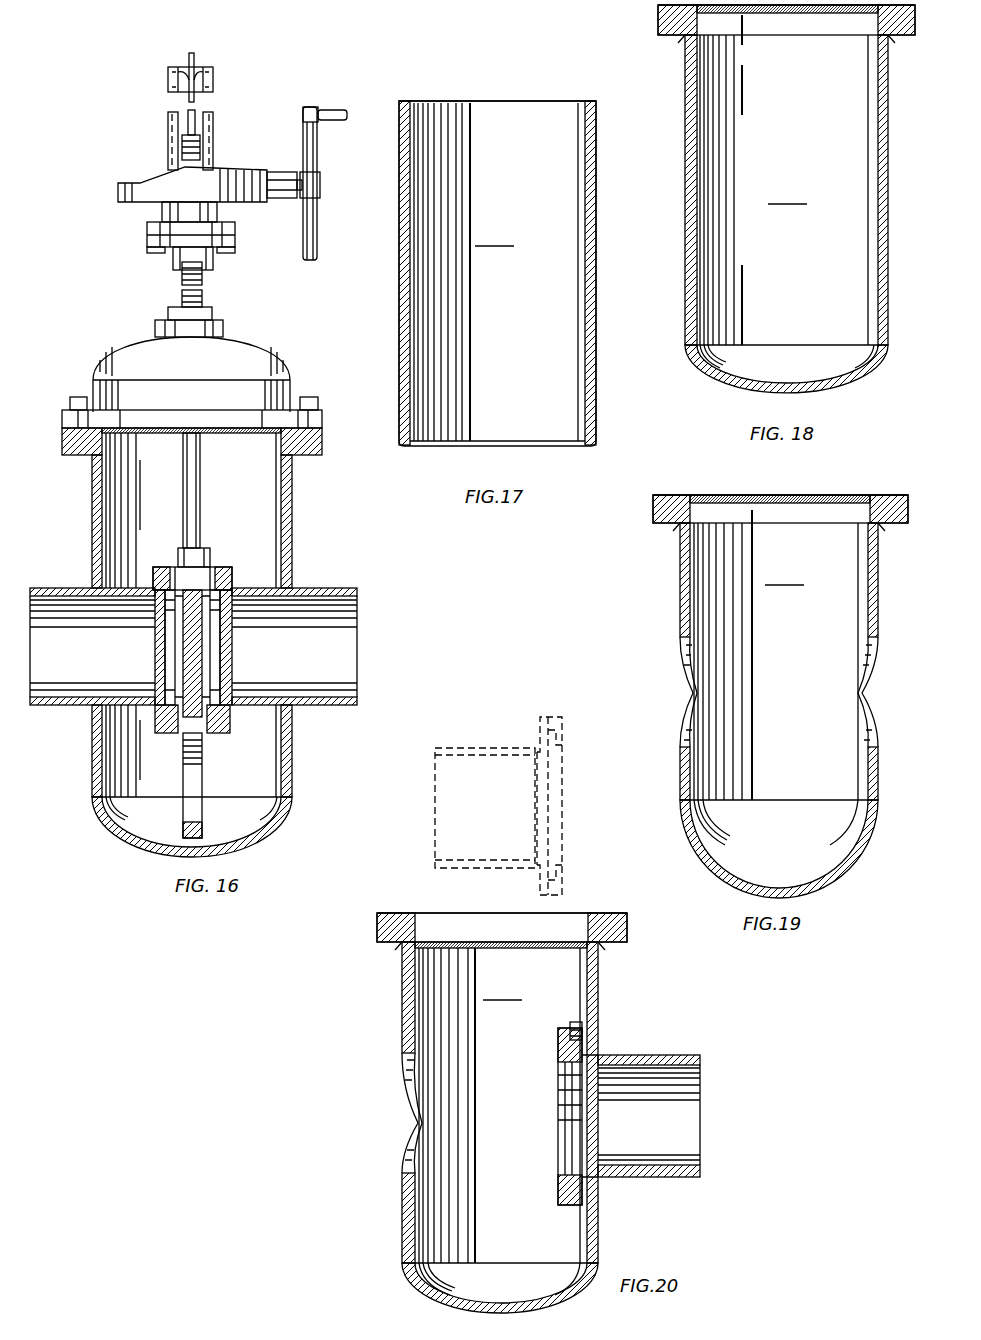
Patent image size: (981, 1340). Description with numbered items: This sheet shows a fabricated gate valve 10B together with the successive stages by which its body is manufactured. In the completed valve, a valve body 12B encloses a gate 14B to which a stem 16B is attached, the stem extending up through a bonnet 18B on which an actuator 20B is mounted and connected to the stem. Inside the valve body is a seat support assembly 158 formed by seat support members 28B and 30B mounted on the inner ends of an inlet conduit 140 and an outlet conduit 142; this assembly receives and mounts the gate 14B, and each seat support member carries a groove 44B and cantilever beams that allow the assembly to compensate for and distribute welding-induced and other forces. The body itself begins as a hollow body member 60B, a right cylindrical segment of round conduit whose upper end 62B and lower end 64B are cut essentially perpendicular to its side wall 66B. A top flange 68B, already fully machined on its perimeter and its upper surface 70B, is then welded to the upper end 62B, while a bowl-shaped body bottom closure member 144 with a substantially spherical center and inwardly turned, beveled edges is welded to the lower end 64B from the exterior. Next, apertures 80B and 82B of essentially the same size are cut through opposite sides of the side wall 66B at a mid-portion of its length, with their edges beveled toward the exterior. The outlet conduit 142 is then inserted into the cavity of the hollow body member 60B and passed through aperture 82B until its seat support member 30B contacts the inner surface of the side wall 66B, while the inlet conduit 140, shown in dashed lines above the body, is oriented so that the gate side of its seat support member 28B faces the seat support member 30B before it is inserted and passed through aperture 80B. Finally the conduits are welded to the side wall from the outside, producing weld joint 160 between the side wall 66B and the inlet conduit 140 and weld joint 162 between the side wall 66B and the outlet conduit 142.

In FIG. 16, the gate valve 10B is at (113, 128).
In FIG. 16, the actuator 20B is at (205, 175).
In FIG. 16, the bonnet 18B is at (262, 417).
In FIG. 16, the valve body 12B is at (66, 520).
In FIG. 16, the stem 16B is at (192, 485).
In FIG. 16, the top flange 68B is at (310, 447).
In FIG. 18, the top flange 68B is at (670, 38).
In FIG. 19, the top flange 68B is at (655, 505).
In FIG. 20, the top flange 68B is at (378, 928).
In FIG. 16, the seat support assembly 158 is at (216, 536).
In FIG. 16, the side wall 66B is at (290, 520).
In FIG. 17, the side wall 66B is at (588, 210).
In FIG. 18, the side wall 66B is at (885, 132).
In FIG. 19, the side wall 66B is at (878, 620).
In FIG. 20, the side wall 66B is at (600, 965).
In FIG. 16, the seat support member 28B is at (155, 578).
In FIG. 20, the seat support member 28B is at (562, 882).
In FIG. 16, the seat support member 30B is at (226, 575).
In FIG. 20, the seat support member 30B is at (590, 1034).
In FIG. 16, the inlet conduit 140 is at (85, 612).
In FIG. 20, the inlet conduit 140 is at (535, 750).
In FIG. 16, the outlet conduit 142 is at (333, 625).
In FIG. 20, the outlet conduit 142 is at (695, 1112).
In FIG. 16, the groove 44B is at (160, 658).
In FIG. 20, the groove 44B is at (575, 1140).
In FIG. 16, the weld joint 160 is at (92, 710).
In FIG. 16, the weld joint 162 is at (292, 710).
In FIG. 16, the gate 14B is at (192, 765).
In FIG. 16, the lower end 64B is at (265, 797).
In FIG. 17, the lower end 64B is at (510, 446).
In FIG. 18, the lower end 64B is at (740, 345).
In FIG. 16, the body bottom closure member 144 is at (250, 847).
In FIG. 18, the body bottom closure member 144 is at (720, 396).
In FIG. 19, the body bottom closure member 144 is at (820, 878).
In FIG. 20, the body bottom closure member 144 is at (420, 1298).
In FIG. 17, the upper end 62B is at (470, 103).
In FIG. 18, the upper end 62B is at (690, 6).
In FIG. 19, the upper end 62B is at (745, 496).
In FIG. 20, the upper end 62B is at (460, 914).
In FIG. 17, the hollow body member 60B is at (497, 273).
In FIG. 18, the hollow body member 60B is at (787, 194).
In FIG. 19, the hollow body member 60B is at (784, 575).
In FIG. 20, the hollow body member 60B is at (502, 990).
In FIG. 18, the upper surface 70B is at (830, 10).
In FIG. 19, the upper surface 70B is at (810, 496).
In FIG. 19, the aperture 80B is at (693, 695).
In FIG. 20, the aperture 80B is at (418, 1122).
In FIG. 19, the aperture 82B is at (862, 690).